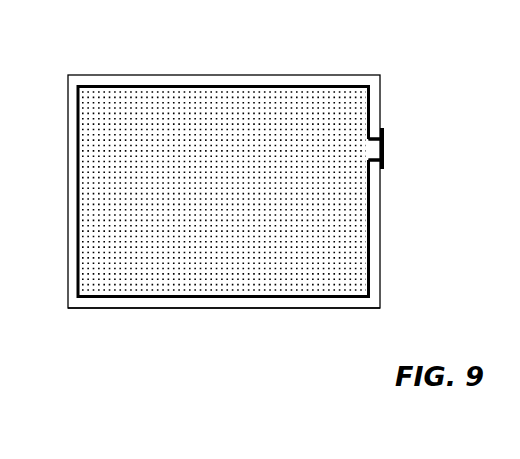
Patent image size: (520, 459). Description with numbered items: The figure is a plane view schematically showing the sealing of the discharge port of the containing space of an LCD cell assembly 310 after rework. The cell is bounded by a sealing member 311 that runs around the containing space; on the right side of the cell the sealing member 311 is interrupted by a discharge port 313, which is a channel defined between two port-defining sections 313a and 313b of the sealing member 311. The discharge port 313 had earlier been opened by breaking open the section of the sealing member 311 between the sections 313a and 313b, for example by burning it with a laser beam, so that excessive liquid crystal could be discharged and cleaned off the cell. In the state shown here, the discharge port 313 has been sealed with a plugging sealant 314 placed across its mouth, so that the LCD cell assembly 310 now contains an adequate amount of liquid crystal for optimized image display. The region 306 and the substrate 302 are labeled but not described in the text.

The LCD cell assembly 310 is at (88, 319).
The substrate 302 is at (162, 277).
The active region 306 is at (232, 200).
The sealing member 311 is at (223, 298).
The discharge port 313 is at (372, 148).
The port-defining section 313a is at (376, 127).
The port-defining section 313b is at (373, 163).
The plugging sealant 314 is at (384, 147).